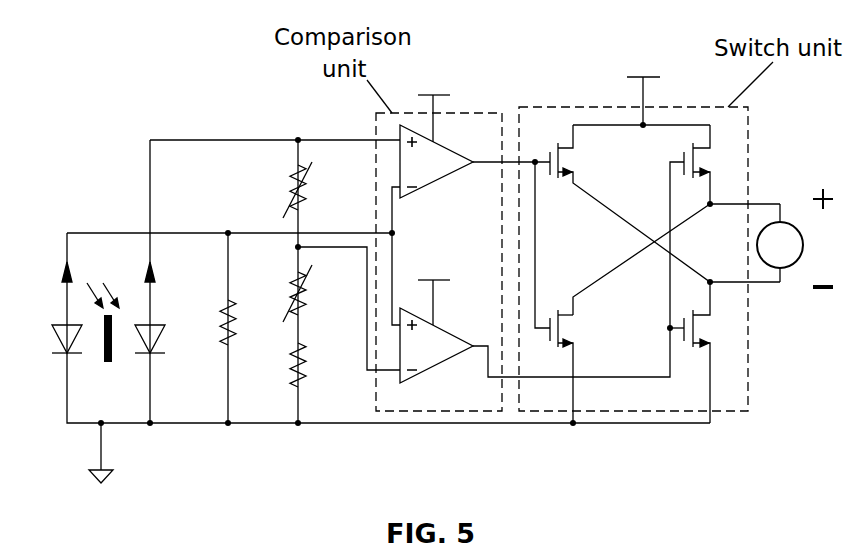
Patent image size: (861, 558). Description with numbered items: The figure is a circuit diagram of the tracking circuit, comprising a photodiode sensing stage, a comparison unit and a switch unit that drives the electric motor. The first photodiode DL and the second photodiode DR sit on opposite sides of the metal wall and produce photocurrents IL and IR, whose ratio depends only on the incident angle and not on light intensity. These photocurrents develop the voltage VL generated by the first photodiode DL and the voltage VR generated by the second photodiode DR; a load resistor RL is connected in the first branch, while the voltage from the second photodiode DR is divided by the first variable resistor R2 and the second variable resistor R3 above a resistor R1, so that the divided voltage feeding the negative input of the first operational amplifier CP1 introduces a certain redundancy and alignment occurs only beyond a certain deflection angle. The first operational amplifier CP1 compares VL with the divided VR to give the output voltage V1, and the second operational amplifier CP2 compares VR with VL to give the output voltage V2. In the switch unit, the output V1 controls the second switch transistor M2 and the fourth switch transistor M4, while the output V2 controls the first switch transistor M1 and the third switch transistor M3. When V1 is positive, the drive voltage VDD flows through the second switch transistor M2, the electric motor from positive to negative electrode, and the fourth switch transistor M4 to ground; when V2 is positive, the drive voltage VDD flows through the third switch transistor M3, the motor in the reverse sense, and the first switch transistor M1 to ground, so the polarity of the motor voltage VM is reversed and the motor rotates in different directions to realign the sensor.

The voltage generated by the first photodiode VL is at (71, 219).
The voltage generated by the second photodiode VR is at (154, 122).
The photocurrent generated by the first photodiode IL is at (52, 266).
The photocurrent generated by the second photodiode IR is at (162, 266).
The first photodiode DL is at (48, 340).
The second photodiode DR is at (167, 340).
The load resistor RL is at (243, 322).
The resistor R1 is at (315, 365).
The first variable resistor R2 is at (311, 293).
The second variable resistor R3 is at (311, 190).
The first operational amplifier CP1 is at (436, 343).
The second operational amplifier CP2 is at (436, 159).
The output voltage of the first operational amplifier V1 is at (575, 269).
The output voltage of the second operational amplifier V2 is at (508, 229).
The drive voltage VDD is at (641, 101).
The first switch transistor M1 is at (577, 366).
The second switch transistor M2 is at (712, 352).
The third switch transistor M3 is at (665, 203).
The fourth switch transistor M4 is at (676, 220).
The motor voltage VM is at (795, 239).